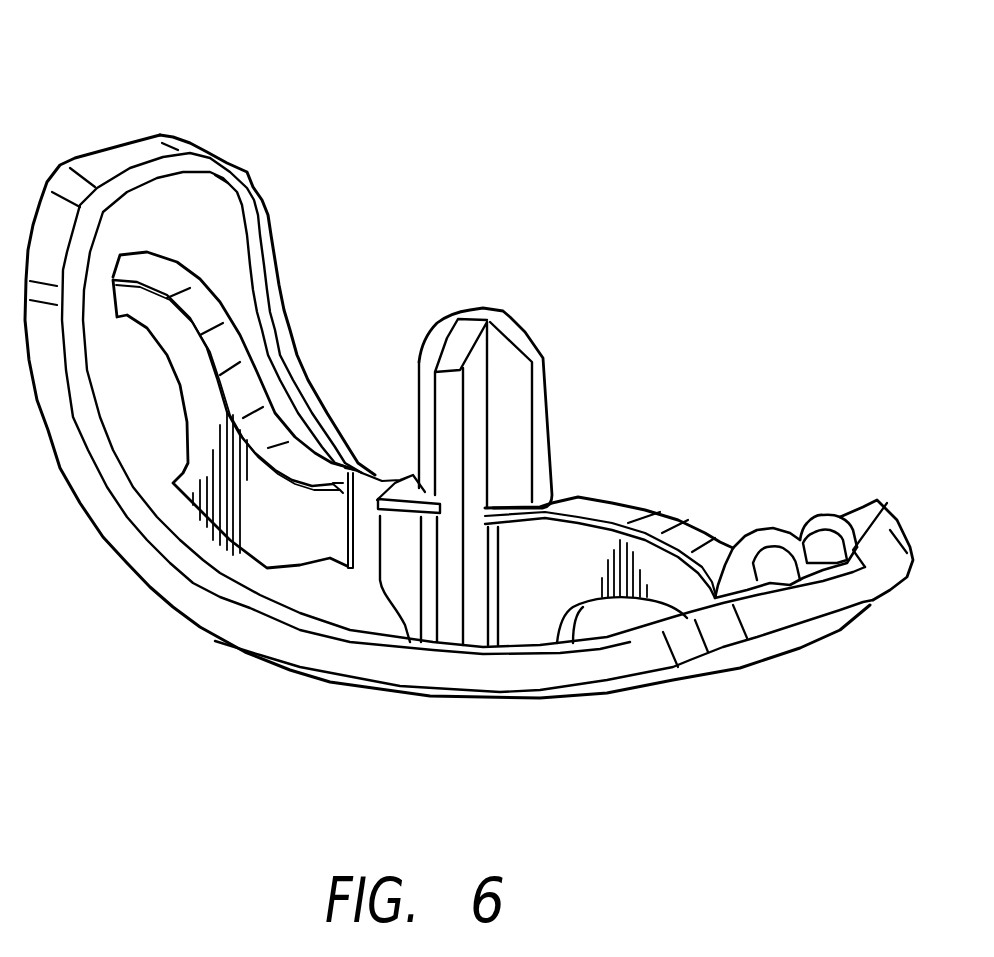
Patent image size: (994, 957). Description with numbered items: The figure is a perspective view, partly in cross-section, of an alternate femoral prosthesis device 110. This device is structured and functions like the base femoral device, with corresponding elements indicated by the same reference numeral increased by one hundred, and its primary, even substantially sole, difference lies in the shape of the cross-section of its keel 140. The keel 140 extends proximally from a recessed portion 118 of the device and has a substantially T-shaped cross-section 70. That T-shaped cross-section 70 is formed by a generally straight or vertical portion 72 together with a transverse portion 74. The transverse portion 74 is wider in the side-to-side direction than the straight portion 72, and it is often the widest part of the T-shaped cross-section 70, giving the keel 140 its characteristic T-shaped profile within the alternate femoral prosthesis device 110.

The alternate femoral prosthesis device 110 is at (620, 330).
The recessed portion 118 is at (217, 215).
The keel 140 is at (635, 485).
The T-shaped cross-section 70 is at (320, 532).
The straight portion 72 is at (345, 492).
The transverse portion 74 is at (345, 463).